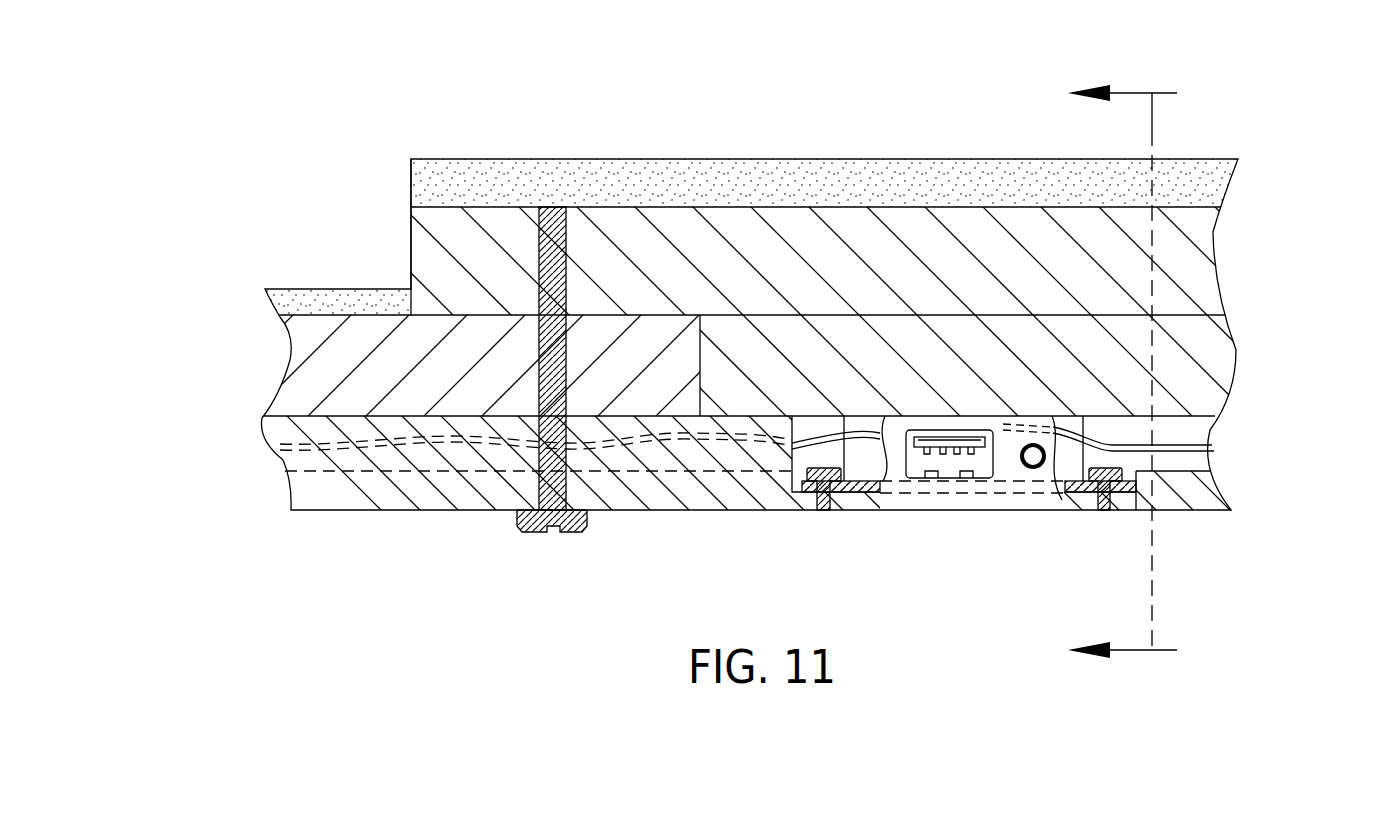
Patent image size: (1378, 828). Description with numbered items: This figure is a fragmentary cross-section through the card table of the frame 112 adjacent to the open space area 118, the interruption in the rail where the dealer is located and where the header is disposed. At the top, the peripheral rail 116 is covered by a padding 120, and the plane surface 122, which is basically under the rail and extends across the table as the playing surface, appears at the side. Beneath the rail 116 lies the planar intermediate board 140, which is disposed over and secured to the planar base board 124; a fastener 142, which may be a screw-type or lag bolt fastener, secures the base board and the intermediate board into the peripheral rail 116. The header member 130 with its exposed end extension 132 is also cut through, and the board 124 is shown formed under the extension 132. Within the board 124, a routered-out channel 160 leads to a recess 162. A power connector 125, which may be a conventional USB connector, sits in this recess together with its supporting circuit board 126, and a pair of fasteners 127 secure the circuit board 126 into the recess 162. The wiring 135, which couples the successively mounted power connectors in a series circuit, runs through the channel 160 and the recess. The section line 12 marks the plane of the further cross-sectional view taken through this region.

The section line 12- 12 is at (1139, 372).
The frame 112 is at (1261, 268).
The peripheral rail 116 is at (840, 231).
The open space area 118 is at (264, 231).
The padding 120 is at (483, 178).
The plane surface 122 is at (340, 296).
The board 124 is at (701, 533).
The power connector 125 is at (946, 460).
The circuit board 126 is at (852, 494).
The fasteners 127 is at (780, 486).
The header member 130 is at (285, 400).
The end extension 132 is at (636, 350).
The wiring 135 is at (1183, 445).
The planar intermediate board 140 is at (1217, 357).
The fasteners 142 is at (567, 460).
The channel 160 is at (1170, 462).
The recess 162 is at (1135, 505).